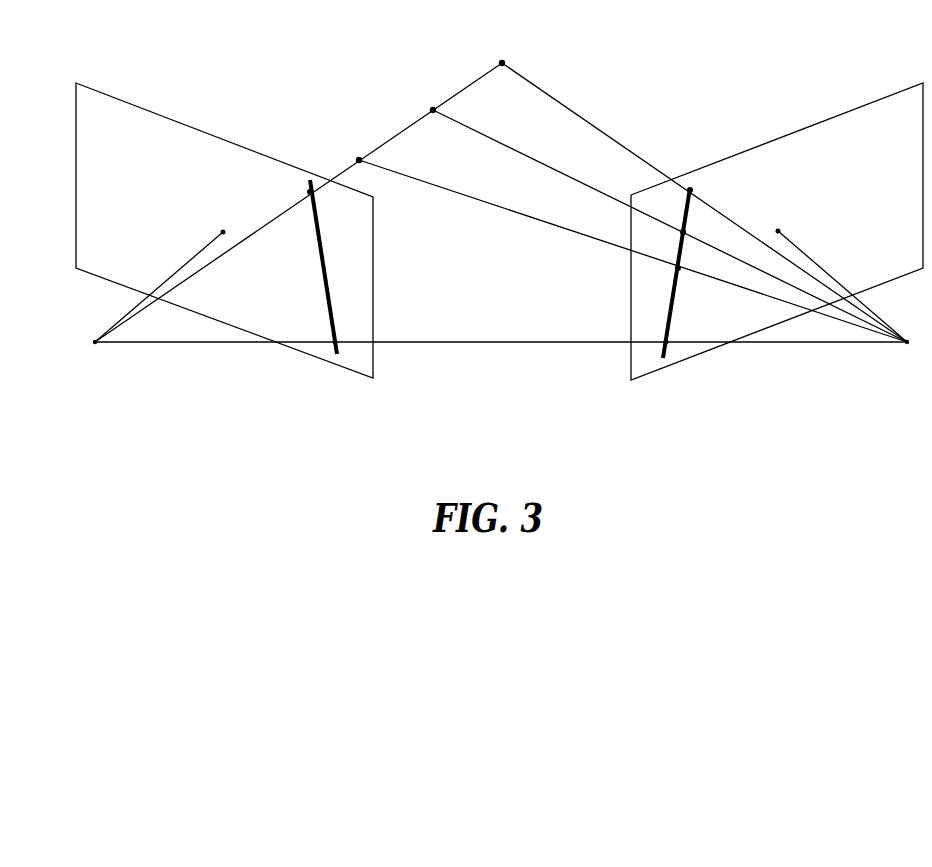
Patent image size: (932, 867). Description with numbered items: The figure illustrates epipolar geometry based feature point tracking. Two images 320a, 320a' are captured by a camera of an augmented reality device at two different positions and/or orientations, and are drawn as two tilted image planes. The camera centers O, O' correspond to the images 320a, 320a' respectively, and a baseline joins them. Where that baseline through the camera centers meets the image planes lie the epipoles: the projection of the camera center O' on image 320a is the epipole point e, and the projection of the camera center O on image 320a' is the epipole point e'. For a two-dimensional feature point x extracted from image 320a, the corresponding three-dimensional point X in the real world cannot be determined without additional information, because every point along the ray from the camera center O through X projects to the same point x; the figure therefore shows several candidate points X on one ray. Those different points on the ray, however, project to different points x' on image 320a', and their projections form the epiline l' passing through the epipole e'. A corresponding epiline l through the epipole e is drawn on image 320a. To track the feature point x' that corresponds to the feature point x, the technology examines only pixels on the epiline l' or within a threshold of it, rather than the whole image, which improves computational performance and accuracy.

The image 320a is at (224, 216).
The image 320a' is at (777, 217).
The camera center O is at (291, 217).
The camera center O' is at (641, 217).
The 3D point X is at (425, 100).
The 2D feature point x is at (303, 191).
The 2D feature point x' is at (673, 238).
The epiline l is at (327, 267).
The epiline l' is at (676, 273).
The epipole point e is at (343, 338).
The epipole point e' is at (659, 338).